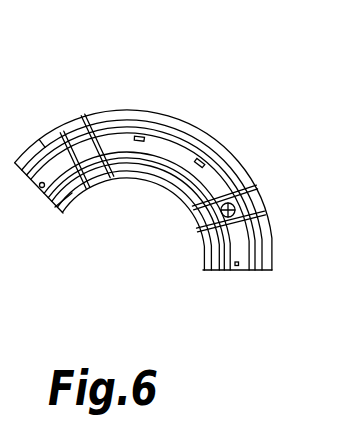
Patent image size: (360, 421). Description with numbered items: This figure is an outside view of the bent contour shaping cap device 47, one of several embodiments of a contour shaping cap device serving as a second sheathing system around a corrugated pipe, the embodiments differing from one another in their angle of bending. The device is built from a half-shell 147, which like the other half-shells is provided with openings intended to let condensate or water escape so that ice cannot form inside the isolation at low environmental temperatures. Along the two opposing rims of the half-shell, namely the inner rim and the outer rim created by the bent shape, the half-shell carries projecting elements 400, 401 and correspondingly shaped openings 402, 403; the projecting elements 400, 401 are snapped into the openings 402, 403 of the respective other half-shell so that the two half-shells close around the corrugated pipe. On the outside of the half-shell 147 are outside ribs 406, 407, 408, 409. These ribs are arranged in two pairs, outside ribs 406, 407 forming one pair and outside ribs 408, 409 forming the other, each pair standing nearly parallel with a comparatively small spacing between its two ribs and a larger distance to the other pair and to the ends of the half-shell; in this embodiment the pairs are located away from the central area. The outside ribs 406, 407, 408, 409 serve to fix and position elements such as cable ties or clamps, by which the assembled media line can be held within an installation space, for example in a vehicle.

The contour shaping cap device 47 is at (136, 168).
The half-shell 147 is at (160, 117).
The projecting element 400 is at (22, 199).
The projecting element 401 is at (36, 236).
The opening 402 is at (28, 157).
The opening 403 is at (204, 257).
The outside rib 406 is at (207, 230).
The outside rib 407 is at (197, 206).
The outside rib 408 is at (62, 131).
The outside rib 409 is at (85, 116).